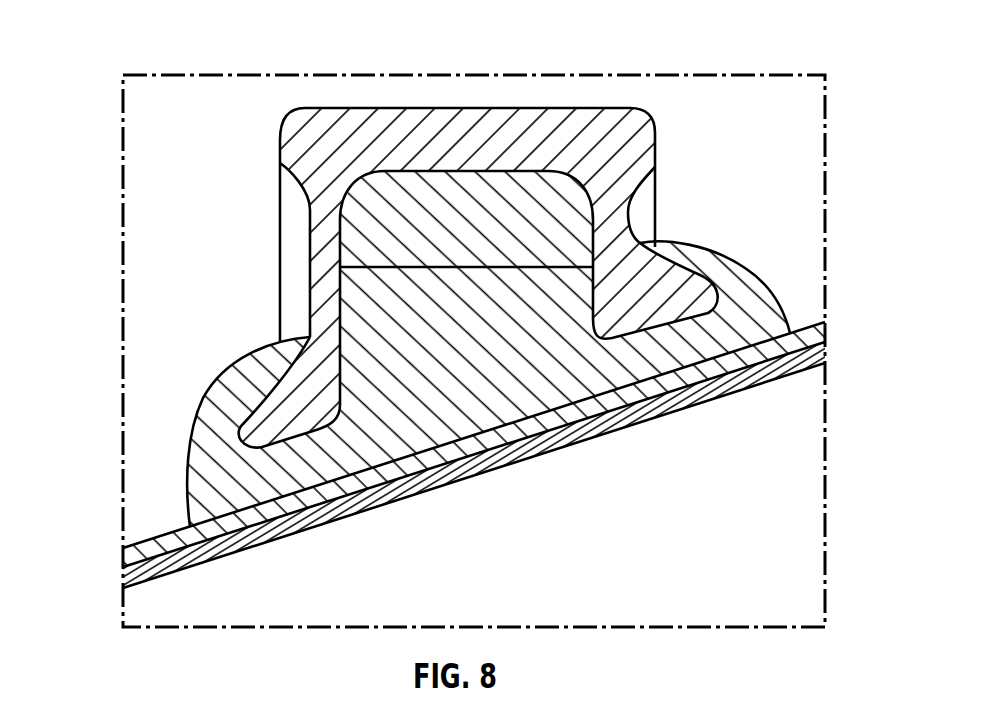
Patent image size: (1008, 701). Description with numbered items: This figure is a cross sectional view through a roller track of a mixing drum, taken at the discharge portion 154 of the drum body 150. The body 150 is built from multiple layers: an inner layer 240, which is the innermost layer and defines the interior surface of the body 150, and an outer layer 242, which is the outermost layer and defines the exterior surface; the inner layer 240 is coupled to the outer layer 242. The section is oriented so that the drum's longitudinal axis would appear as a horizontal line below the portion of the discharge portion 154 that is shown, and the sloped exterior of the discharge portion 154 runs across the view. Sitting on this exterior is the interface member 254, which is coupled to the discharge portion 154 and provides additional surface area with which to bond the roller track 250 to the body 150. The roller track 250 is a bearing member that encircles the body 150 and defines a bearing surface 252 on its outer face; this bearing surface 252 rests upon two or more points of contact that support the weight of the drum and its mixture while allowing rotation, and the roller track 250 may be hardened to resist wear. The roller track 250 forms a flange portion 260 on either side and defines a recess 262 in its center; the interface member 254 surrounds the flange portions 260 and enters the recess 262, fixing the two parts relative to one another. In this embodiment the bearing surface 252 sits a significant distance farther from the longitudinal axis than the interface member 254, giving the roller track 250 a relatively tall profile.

The body 150 is at (427, 461).
The discharge portion 154 is at (808, 488).
The inner layer 240 is at (677, 403).
The outer layer 242 is at (752, 357).
The roller track 250 is at (466, 228).
The bearing surface 252 is at (335, 108).
The interface member 254 is at (200, 453).
The flange portion 260 is at (680, 273).
The recess 262 is at (419, 349).